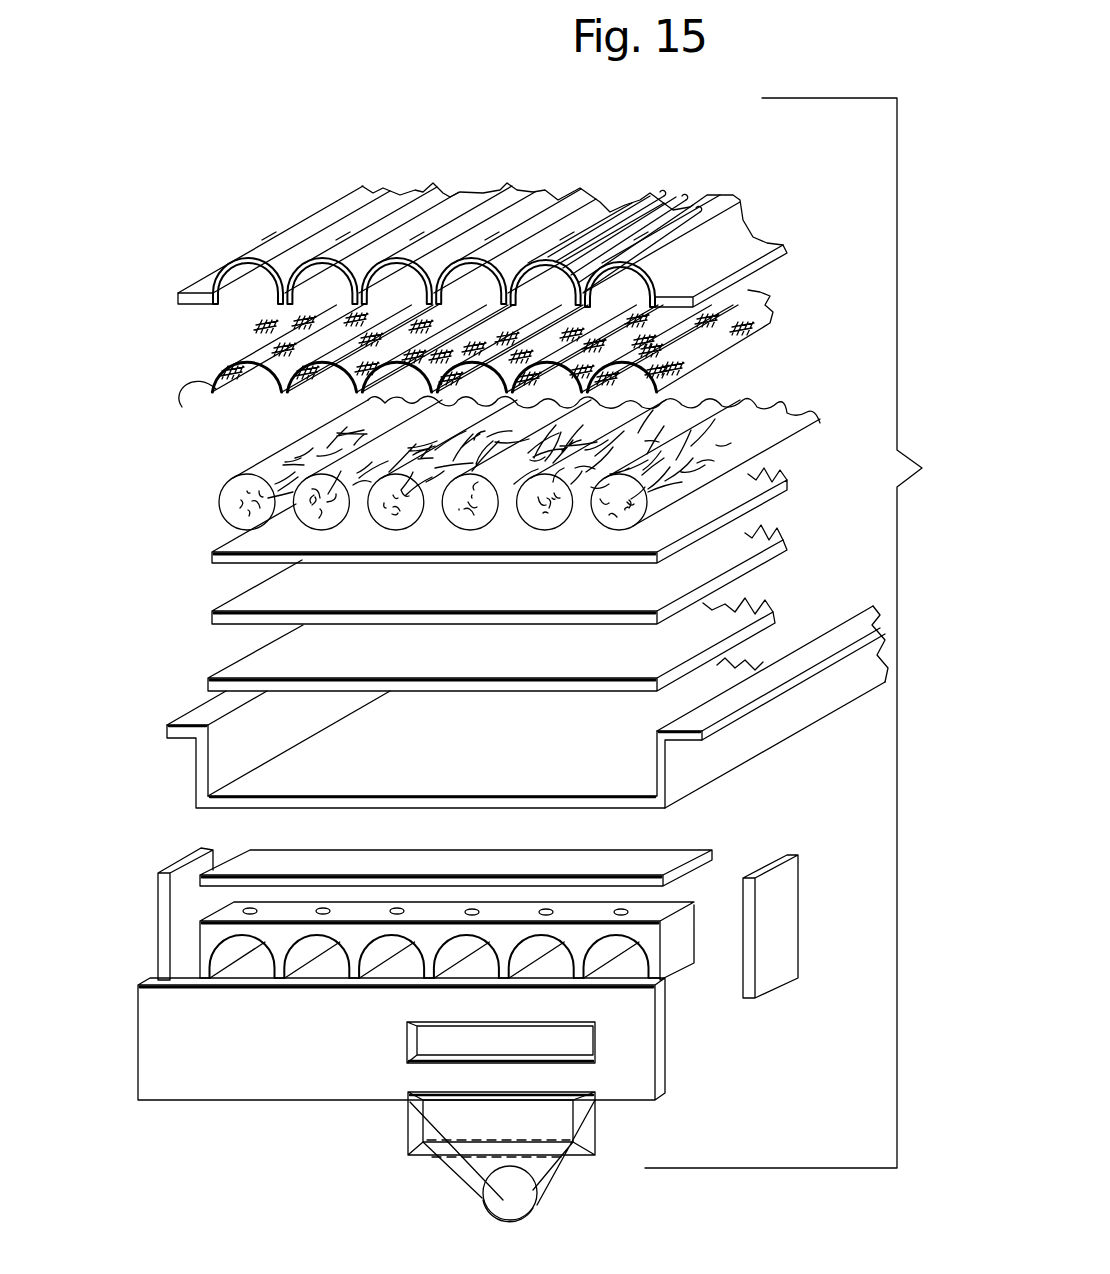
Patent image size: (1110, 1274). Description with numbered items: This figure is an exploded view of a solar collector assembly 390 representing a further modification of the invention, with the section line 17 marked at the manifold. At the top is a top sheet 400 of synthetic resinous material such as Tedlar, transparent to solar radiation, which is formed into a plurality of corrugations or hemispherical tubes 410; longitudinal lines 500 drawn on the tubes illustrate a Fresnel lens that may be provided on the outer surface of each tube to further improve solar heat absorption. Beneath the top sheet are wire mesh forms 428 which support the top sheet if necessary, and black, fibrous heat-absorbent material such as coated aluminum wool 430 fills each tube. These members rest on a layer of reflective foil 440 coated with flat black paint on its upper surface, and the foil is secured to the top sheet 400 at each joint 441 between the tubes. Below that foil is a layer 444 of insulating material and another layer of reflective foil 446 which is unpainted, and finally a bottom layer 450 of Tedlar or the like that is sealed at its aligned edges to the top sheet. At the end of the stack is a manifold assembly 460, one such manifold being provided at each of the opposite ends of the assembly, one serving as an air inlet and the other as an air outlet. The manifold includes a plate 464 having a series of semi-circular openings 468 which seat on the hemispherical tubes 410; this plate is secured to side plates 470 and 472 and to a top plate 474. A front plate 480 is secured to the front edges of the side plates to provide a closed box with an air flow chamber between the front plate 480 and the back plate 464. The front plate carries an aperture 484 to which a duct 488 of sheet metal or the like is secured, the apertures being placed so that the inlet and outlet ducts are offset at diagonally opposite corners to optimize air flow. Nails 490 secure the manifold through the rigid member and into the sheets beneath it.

The assembly 390 is at (806, 148).
The top sheet 400 is at (490, 245).
The hemispherical tubes 410 is at (377, 240).
The joint 441 is at (610, 212).
The longitudinal lines 500 is at (687, 208).
The wire mesh forms 428 is at (297, 402).
The coated aluminum wool 430 is at (219, 506).
The layer of reflective foil 440 is at (462, 549).
The layer of insulating material 444 is at (635, 609).
The layer of reflective foil 446 is at (480, 669).
The bottom layer 450 is at (480, 774).
The manifold assembly 460 is at (690, 837).
The top plate 474 is at (610, 852).
The nails 490 is at (622, 913).
The plate 464 is at (465, 950).
The semi-circular openings 468 is at (340, 947).
The side plate 472 is at (158, 940).
The side plate 470 is at (785, 945).
The front plate 480 is at (395, 1039).
The aperture 484 is at (577, 1042).
The duct 488 is at (470, 1167).
The section line 17- 17 is at (97, 859).